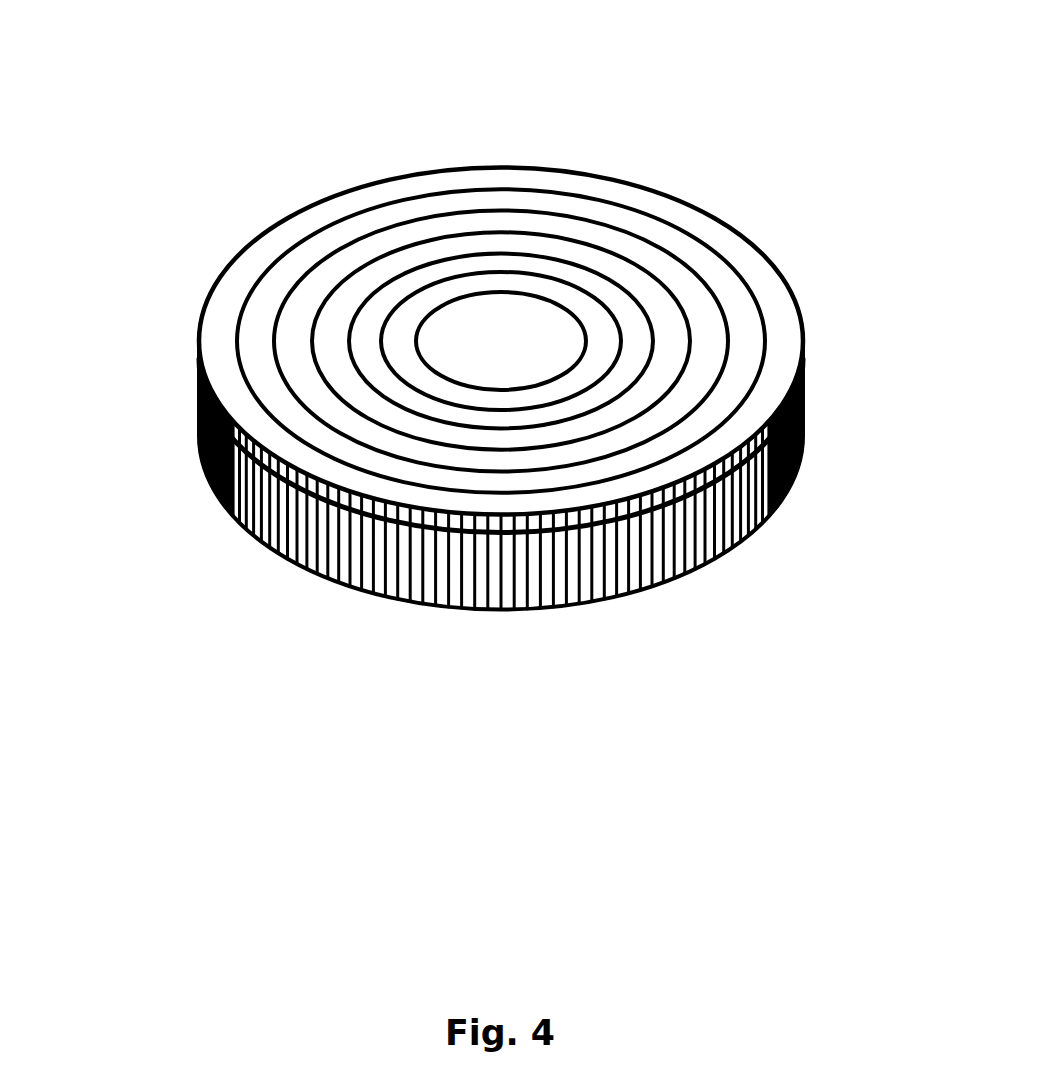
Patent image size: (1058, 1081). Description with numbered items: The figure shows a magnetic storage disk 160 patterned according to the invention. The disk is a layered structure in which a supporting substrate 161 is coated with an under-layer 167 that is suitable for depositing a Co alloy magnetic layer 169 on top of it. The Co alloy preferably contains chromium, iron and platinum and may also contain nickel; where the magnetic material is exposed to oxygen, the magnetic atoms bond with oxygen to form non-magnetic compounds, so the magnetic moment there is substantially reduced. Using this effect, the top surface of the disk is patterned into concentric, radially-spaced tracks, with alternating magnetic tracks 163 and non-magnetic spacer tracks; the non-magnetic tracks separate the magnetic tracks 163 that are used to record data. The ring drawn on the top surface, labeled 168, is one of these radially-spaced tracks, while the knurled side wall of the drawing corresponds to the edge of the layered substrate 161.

The magnetic storage disk 160 is at (612, 165).
The supporting substrate 161 is at (355, 552).
The magnetic tracks 163 is at (703, 220).
The under-layer 167 is at (298, 476).
The concentric ridge 168 is at (730, 392).
The magnetic layer 169 is at (200, 461).